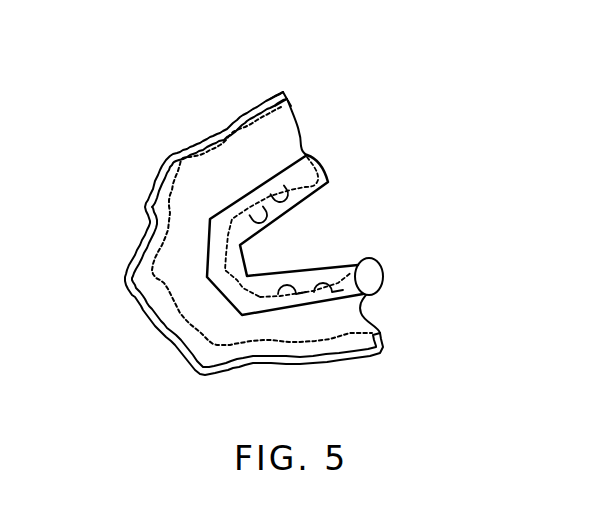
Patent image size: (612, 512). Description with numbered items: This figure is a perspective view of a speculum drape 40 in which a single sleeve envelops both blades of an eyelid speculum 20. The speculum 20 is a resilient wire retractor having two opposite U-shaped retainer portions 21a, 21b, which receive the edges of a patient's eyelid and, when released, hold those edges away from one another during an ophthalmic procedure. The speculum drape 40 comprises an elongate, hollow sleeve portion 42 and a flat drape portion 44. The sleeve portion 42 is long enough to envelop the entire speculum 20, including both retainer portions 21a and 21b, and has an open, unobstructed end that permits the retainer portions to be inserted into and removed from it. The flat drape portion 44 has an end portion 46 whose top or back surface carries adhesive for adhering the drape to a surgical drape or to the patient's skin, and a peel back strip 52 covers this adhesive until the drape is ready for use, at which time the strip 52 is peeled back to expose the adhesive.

The speculum 20 is at (238, 280).
The retainer portion 21a is at (340, 269).
The retainer portion 21b is at (300, 187).
The speculum drape 40 is at (165, 150).
The sleeve portion 42 is at (383, 280).
The drape portion 44 is at (288, 139).
The end portion 46 is at (291, 102).
The peel back strip 52 is at (250, 109).